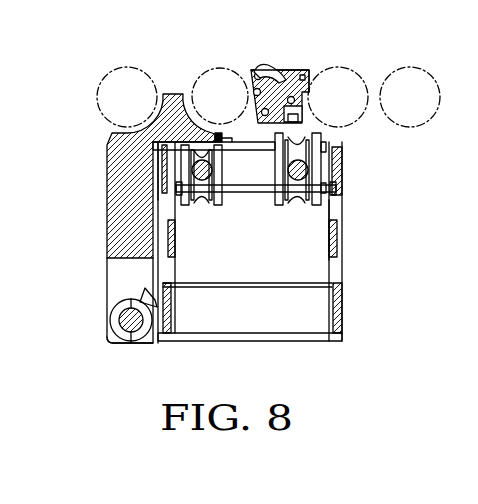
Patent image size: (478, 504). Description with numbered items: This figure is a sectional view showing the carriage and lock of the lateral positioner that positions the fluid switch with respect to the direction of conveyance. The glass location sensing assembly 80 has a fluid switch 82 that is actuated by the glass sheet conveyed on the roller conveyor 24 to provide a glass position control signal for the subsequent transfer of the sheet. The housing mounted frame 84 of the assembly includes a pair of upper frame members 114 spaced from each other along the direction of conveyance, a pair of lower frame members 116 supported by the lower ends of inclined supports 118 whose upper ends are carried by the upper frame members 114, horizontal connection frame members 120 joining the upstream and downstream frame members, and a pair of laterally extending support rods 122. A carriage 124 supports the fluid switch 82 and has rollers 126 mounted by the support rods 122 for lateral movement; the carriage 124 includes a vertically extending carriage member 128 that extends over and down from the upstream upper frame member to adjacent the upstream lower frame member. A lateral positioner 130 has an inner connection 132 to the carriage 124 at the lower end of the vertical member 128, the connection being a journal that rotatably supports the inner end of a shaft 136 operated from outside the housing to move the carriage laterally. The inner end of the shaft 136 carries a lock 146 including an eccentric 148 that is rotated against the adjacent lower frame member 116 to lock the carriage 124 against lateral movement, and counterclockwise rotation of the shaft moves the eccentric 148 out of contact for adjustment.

The roller conveyor 24 is at (105, 74).
The glass location sensing assembly 80 is at (262, 48).
The fluid switch 82 is at (322, 66).
The housing mounted frame 84 is at (166, 86).
The upper frame members 114 is at (157, 160).
The lower frame members 116 is at (153, 293).
The inclined supports 118 is at (176, 240).
The horizontal connection frame members 120 is at (255, 145).
The support rods 122 is at (275, 172).
The carriage 124 is at (96, 177).
The rollers 126 is at (207, 198).
The vertically extending carriage member 128 is at (113, 190).
The lateral positioner 130 is at (104, 360).
The inner connection 132 is at (108, 320).
The shaft 136 is at (130, 318).
The lock 146 is at (159, 351).
The eccentric 148 is at (160, 305).